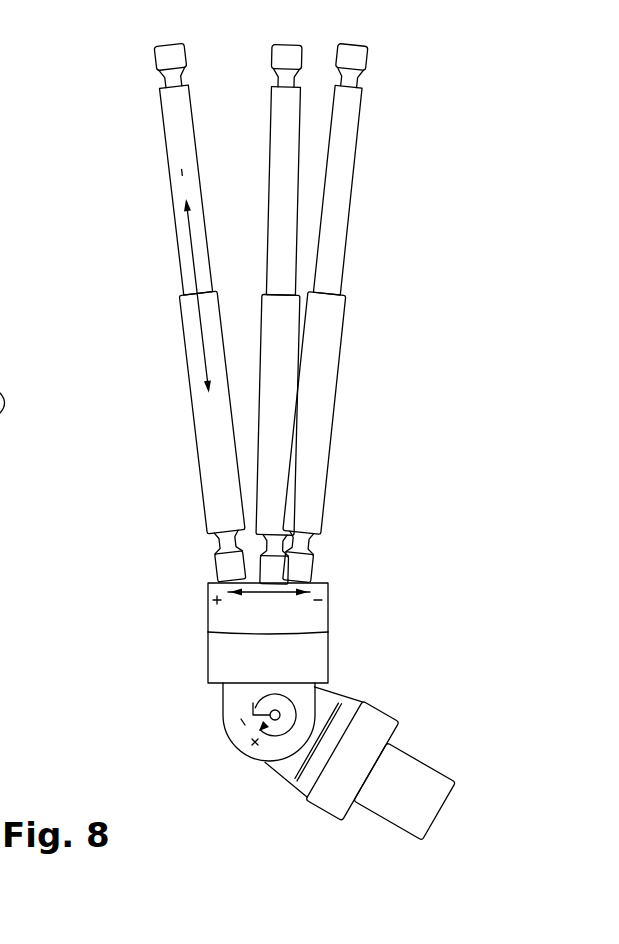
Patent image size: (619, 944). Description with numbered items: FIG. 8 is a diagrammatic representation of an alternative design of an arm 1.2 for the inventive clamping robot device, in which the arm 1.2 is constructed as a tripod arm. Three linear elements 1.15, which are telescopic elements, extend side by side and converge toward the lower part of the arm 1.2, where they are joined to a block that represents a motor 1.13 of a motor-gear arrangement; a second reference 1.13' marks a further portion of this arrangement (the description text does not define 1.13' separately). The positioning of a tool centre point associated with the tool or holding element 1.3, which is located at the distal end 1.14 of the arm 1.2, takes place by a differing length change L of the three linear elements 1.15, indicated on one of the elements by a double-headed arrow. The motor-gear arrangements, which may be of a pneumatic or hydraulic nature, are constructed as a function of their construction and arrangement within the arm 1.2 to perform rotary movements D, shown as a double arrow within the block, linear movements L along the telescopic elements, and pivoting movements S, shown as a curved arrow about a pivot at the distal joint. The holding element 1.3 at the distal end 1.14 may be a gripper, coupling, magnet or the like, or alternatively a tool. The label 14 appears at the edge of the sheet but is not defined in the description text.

The arm 1.2 is at (412, 482).
The linear elements 1.15 is at (203, 182).
The linear movement / length change L is at (193, 274).
The motor 1.13 is at (194, 670).
The upper coupling block part 1.13' is at (190, 607).
The rotary movement D is at (270, 592).
The distal end 1.14 is at (455, 698).
The holding element 1.3 is at (430, 782).
The pivoting movement S is at (285, 743).
The label 14 is at (24, 261).